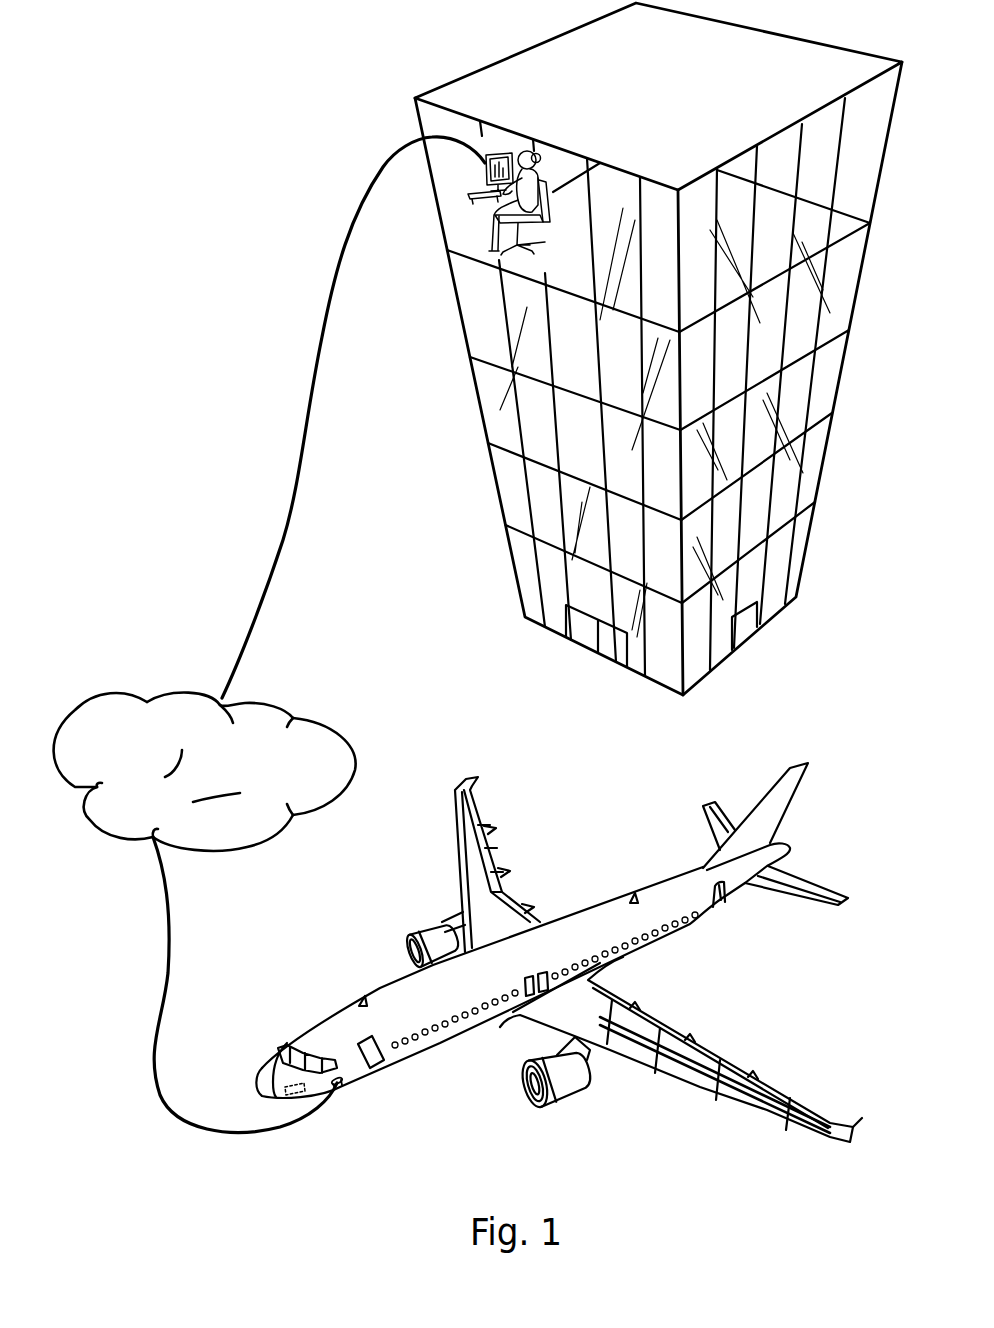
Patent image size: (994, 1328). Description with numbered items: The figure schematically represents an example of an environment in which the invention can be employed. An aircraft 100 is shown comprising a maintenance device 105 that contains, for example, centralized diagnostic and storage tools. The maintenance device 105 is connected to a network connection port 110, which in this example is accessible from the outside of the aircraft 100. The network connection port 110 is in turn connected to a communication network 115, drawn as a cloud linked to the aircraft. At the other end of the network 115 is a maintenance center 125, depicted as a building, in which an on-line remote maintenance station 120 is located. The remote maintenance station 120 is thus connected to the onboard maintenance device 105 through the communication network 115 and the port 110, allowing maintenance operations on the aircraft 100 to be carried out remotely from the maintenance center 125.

The aircraft 100 is at (648, 880).
The maintenance device 105 is at (283, 1070).
The network connection port 110 is at (341, 1088).
The network 115 is at (183, 692).
The on-line remote maintenance station 120 is at (478, 177).
The maintenance center 125 is at (515, 68).